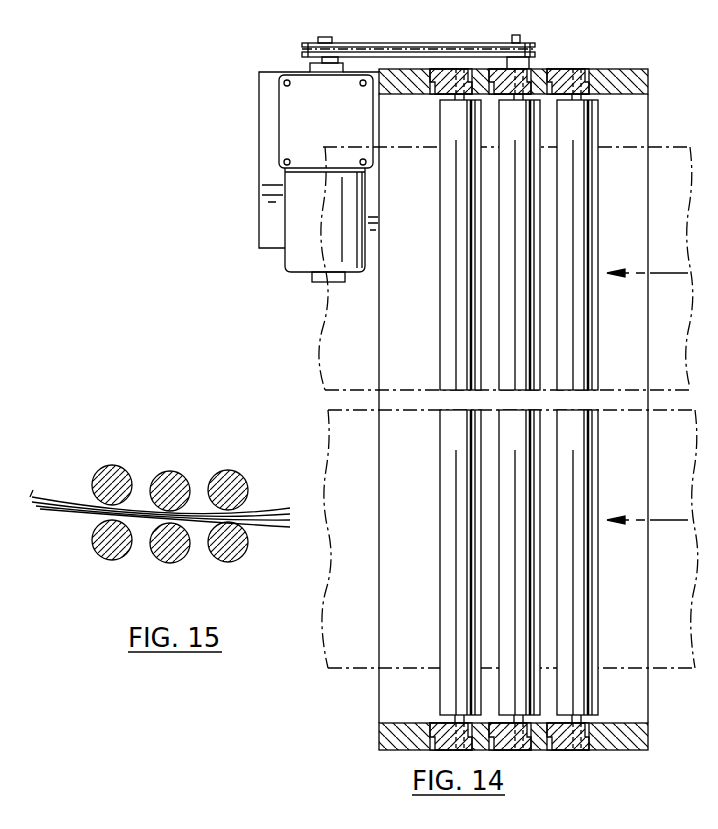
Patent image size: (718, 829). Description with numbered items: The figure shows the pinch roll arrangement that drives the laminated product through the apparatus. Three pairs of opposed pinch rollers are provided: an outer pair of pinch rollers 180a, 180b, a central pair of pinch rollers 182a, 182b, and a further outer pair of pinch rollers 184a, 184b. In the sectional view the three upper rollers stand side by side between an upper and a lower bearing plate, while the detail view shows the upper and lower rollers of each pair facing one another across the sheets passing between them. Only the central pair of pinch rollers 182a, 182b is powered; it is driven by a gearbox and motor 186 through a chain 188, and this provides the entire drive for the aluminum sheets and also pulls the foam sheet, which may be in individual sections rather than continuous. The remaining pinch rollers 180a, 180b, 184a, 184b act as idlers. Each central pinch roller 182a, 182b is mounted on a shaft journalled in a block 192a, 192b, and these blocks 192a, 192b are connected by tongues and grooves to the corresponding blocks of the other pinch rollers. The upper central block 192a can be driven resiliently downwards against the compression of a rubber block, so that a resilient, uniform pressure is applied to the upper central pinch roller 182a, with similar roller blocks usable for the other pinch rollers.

In FIG. 14, the gearbox and motor 186 is at (279, 121).
In FIG. 14, the chain 188 is at (375, 57).
In FIG. 14, the block 192a is at (540, 77).
In FIG. 14, the block 192b is at (538, 738).
In FIG. 14, the pinch roller 184a is at (457, 432).
In FIG. 15, the pinch roller 184a is at (112, 465).
In FIG. 14, the pinch roller 182a is at (513, 455).
In FIG. 15, the pinch roller 182a is at (170, 471).
In FIG. 14, the pinch roller 180a is at (577, 470).
In FIG. 15, the pinch roller 180a is at (230, 470).
In FIG. 15, the pinch roller 184b is at (98, 556).
In FIG. 15, the pinch roller 182b is at (162, 559).
In FIG. 15, the pinch roller 180b is at (238, 558).